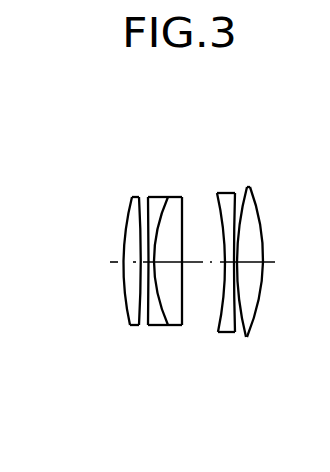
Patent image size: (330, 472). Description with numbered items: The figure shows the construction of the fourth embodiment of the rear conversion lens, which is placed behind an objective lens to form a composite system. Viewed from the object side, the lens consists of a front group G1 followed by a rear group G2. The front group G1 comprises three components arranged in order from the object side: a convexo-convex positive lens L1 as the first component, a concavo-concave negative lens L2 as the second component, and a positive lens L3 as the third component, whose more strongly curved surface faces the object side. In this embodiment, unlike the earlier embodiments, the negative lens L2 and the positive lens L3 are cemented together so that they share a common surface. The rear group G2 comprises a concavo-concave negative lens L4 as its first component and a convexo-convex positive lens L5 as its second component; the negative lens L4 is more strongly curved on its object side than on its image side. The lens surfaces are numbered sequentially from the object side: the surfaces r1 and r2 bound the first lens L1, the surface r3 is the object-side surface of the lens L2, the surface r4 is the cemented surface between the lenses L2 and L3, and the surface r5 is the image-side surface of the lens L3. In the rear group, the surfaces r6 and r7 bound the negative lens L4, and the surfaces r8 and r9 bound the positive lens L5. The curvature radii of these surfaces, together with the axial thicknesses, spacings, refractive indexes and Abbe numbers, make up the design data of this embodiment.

The front group G1 is at (207, 146).
The rear group G2 is at (282, 147).
The convexo-convex positive lens L1 is at (133, 196).
The concavo-concave negative lens L2 is at (160, 196).
The positive lens L3 is at (184, 196).
The concavo-concave negative lens L4 is at (225, 192).
The convexo-convex positive lens L5 is at (251, 189).
The first lens surface r1 is at (128, 318).
The second lens surface r2 is at (137, 325).
The third lens surface r3 is at (148, 325).
The fourth lens surface r4 is at (168, 325).
The fifth lens surface r5 is at (183, 327).
The sixth lens surface r6 is at (218, 331).
The seventh lens surface r7 is at (233, 331).
The eighth lens surface r8 is at (247, 337).
The ninth lens surface r9 is at (261, 308).